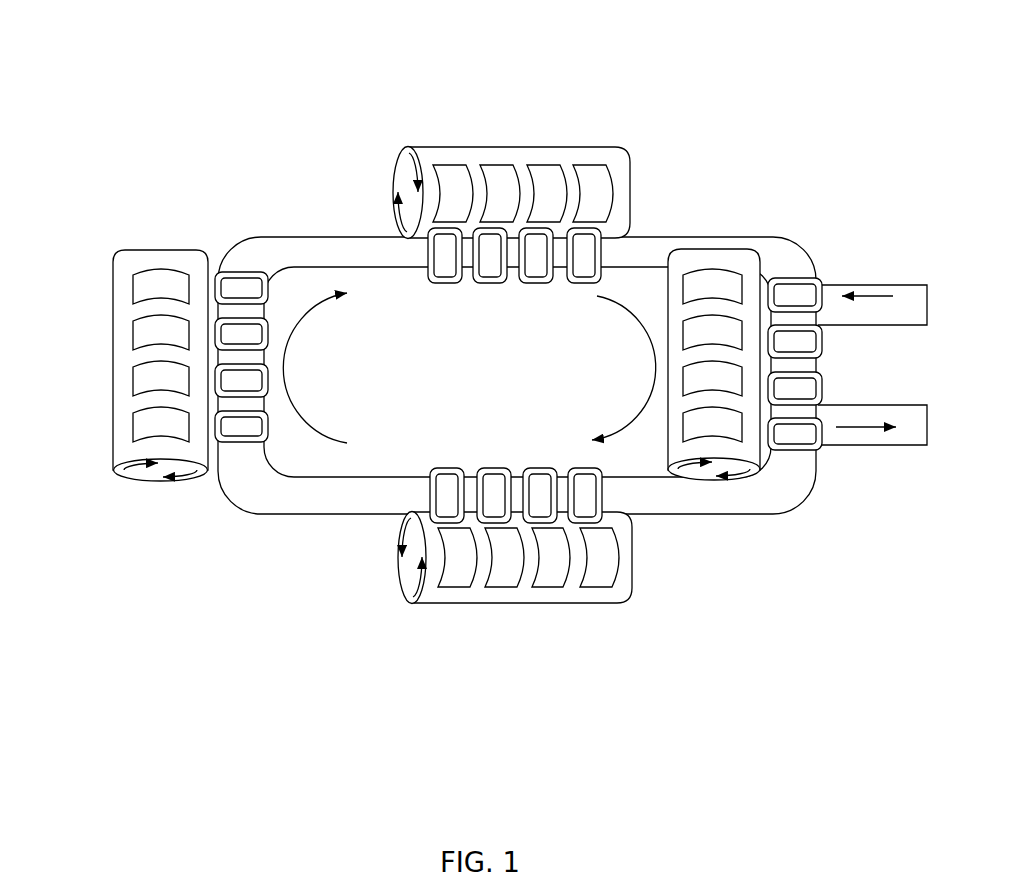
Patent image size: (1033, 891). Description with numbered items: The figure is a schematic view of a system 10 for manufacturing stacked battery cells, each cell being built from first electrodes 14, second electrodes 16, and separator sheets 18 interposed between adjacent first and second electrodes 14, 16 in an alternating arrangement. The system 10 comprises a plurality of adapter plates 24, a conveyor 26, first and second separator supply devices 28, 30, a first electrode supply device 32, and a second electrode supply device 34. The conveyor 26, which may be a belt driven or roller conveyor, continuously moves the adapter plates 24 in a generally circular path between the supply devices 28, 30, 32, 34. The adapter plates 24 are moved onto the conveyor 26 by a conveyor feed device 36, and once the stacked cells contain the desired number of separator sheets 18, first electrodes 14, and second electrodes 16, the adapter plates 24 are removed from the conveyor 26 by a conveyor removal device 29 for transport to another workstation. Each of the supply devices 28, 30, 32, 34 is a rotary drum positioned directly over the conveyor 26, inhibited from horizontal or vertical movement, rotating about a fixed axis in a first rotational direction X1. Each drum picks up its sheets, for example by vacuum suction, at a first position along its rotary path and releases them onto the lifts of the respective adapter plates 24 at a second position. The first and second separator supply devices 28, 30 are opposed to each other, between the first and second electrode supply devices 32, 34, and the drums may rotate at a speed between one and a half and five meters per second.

The system 10 is at (187, 62).
The first electrodes 14 is at (589, 573).
The second electrodes 16 is at (586, 173).
The separator sheets 18 is at (147, 428).
The adapter plates 24 is at (587, 468).
The conveyor 26 is at (300, 232).
The first separator supply device 28 is at (716, 244).
The conveyor removal device 29 is at (873, 455).
The second separator supply device 30 is at (138, 243).
The first electrode supply device 32 is at (438, 610).
The second electrode supply device 34 is at (415, 122).
The conveyor feed device 36 is at (878, 270).
The first rotational direction X1 is at (398, 157).